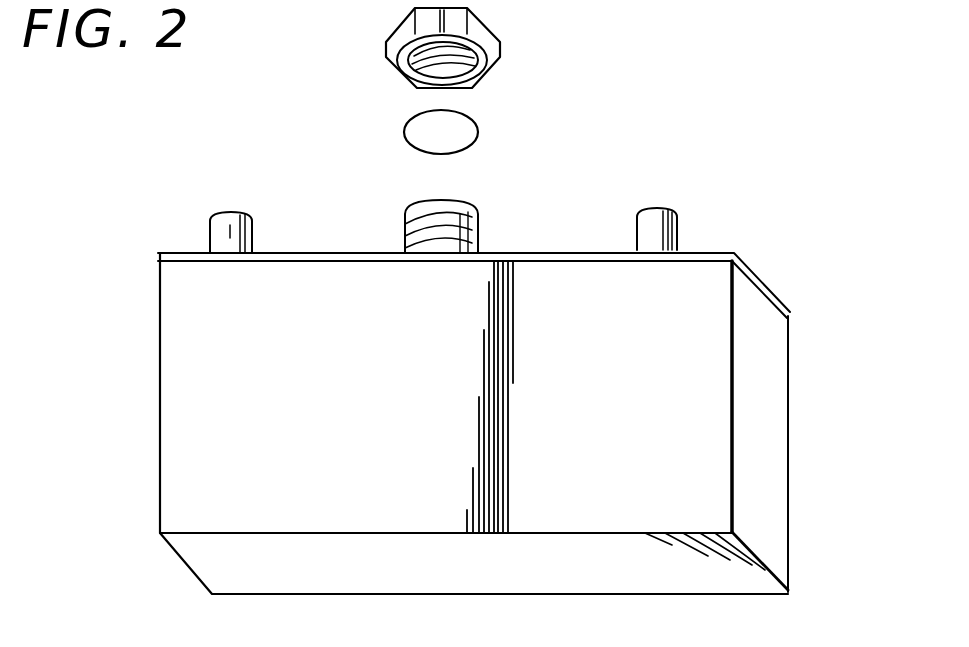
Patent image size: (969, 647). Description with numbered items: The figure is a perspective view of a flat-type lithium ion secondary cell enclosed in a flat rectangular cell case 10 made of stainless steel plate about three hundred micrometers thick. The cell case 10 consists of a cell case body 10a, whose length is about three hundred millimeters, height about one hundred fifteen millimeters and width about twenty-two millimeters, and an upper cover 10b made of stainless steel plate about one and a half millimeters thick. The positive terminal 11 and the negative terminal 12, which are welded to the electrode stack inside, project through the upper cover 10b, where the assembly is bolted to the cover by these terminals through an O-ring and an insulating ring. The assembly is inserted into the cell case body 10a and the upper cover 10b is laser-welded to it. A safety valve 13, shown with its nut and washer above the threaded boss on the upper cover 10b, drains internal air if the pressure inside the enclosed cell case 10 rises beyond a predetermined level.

The flat-type rectangular cell case 10 is at (708, 355).
The cell case body 10a is at (775, 473).
The upper cover 10b is at (715, 253).
The positive terminal 11 is at (653, 218).
The negative terminal 12 is at (230, 212).
The safety valve 13 is at (497, 122).